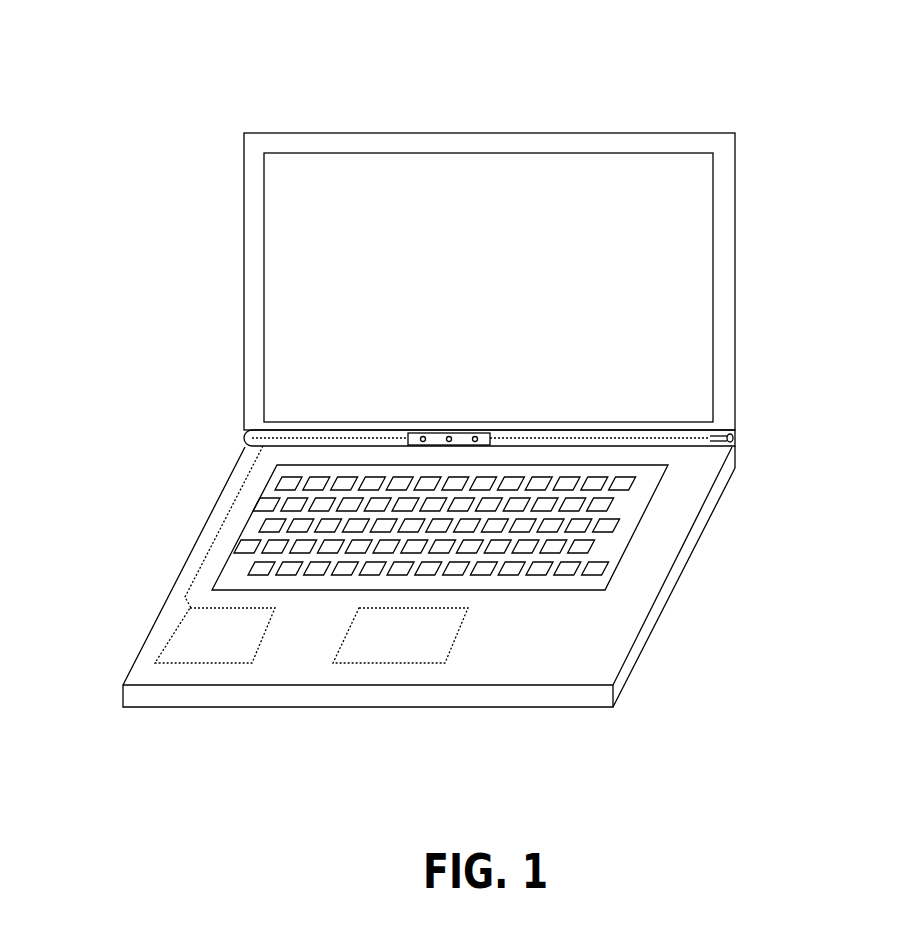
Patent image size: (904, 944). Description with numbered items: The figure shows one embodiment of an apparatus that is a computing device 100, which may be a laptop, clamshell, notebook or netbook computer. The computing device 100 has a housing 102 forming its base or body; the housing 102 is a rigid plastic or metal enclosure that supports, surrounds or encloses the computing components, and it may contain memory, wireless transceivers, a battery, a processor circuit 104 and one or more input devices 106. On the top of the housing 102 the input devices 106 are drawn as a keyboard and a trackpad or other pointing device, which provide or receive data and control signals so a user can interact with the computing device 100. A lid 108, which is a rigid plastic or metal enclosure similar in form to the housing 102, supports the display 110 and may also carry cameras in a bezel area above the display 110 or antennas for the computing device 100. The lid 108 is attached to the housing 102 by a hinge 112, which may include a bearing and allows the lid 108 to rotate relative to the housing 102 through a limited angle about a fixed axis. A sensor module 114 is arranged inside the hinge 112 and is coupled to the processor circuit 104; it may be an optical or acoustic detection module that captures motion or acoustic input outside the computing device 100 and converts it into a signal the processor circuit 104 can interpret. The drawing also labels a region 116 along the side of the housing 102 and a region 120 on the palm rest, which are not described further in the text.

The computing device 100 is at (507, 43).
The housing 102 is at (665, 605).
The processor circuit 104 is at (193, 630).
The input device 106 is at (520, 575).
The lid 108 is at (505, 132).
The display 110 is at (665, 273).
The hinge 112 is at (733, 438).
The sensor module 114 is at (413, 438).
The side region 116 is at (230, 508).
The sensor region 120 is at (232, 652).